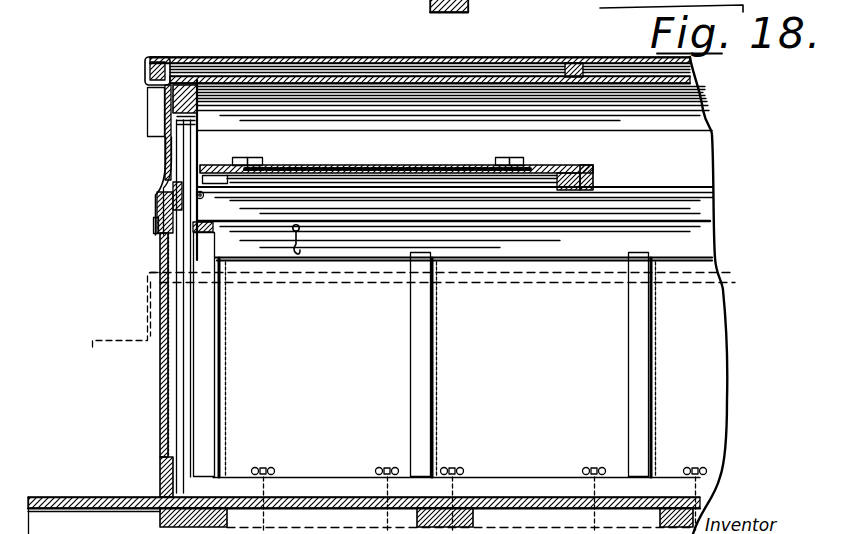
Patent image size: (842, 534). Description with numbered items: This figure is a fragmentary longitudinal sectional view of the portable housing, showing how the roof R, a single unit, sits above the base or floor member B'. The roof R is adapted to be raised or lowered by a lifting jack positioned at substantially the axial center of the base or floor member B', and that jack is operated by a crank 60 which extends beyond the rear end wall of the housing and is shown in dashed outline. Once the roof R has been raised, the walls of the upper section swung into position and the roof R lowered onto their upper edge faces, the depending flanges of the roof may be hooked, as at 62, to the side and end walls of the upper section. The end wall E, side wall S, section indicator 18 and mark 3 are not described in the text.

The base or floor member B' is at (367, 267).
The roof R is at (370, 58).
The section line 18 is at (524, 9).
The crank 60 is at (140, 294).
The hook 62 is at (296, 258).
The end wall E is at (158, 393).
The side wall S is at (720, 356).
The dashed guide line 3 is at (445, 281).